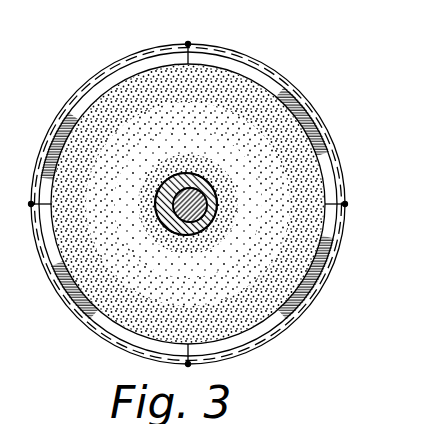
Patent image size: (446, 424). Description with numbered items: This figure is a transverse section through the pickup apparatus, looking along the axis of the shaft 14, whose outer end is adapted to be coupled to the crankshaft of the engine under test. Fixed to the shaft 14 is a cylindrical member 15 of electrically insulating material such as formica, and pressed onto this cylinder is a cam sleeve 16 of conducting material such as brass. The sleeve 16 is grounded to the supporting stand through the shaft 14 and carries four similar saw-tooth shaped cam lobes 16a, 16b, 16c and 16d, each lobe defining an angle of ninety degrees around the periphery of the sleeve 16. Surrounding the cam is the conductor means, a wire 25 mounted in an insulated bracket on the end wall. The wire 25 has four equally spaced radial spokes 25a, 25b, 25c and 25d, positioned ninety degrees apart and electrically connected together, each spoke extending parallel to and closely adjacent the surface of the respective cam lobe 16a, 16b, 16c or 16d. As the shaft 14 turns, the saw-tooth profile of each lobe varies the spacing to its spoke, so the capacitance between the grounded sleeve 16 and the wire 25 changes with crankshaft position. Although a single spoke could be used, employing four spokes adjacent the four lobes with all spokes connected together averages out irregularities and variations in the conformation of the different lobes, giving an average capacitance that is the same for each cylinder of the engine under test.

The shaft 14 is at (216, 206).
The cylindrical member 15 is at (270, 112).
The cam sleeve 16 is at (52, 271).
The cam lobe 16a is at (88, 100).
The cam lobe 16b is at (83, 300).
The cam lobe 16c is at (295, 309).
The cam lobe 16d is at (320, 146).
The wire 25 is at (258, 349).
The radial spoke 25a is at (190, 44).
The radial spoke 25b is at (31, 203).
The radial spoke 25c is at (190, 366).
The radial spoke 25d is at (345, 204).